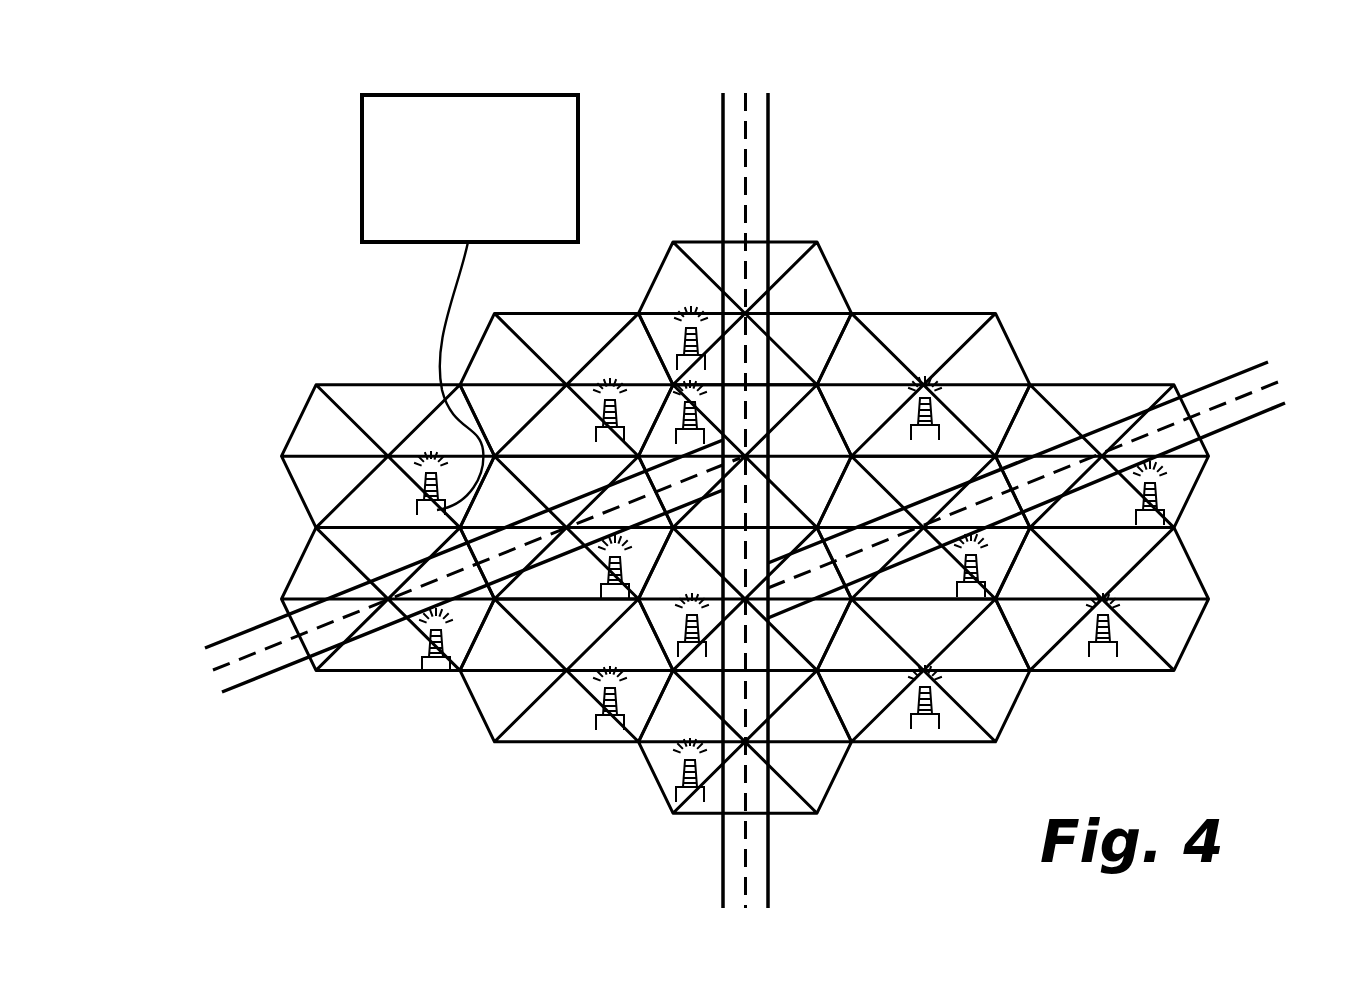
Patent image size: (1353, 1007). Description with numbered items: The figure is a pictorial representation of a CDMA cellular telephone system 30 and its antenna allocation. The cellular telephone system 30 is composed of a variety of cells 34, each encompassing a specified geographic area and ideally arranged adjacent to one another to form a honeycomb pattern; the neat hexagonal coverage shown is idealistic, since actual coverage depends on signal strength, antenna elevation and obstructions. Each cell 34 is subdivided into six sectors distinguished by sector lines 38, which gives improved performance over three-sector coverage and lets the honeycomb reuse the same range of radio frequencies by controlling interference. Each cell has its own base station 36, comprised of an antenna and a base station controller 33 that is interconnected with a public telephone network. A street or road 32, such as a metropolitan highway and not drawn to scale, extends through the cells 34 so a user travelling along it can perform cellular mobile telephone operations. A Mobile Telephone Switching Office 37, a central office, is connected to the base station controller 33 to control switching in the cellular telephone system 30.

The cellular telephone system 30 is at (1025, 150).
The road 32 is at (768, 157).
The base station controller 33 is at (417, 511).
The cell 34 is at (1120, 382).
The base station 36 is at (413, 440).
The Mobile Telephone Switching Office 37 is at (578, 120).
The sector lines 38 is at (342, 410).